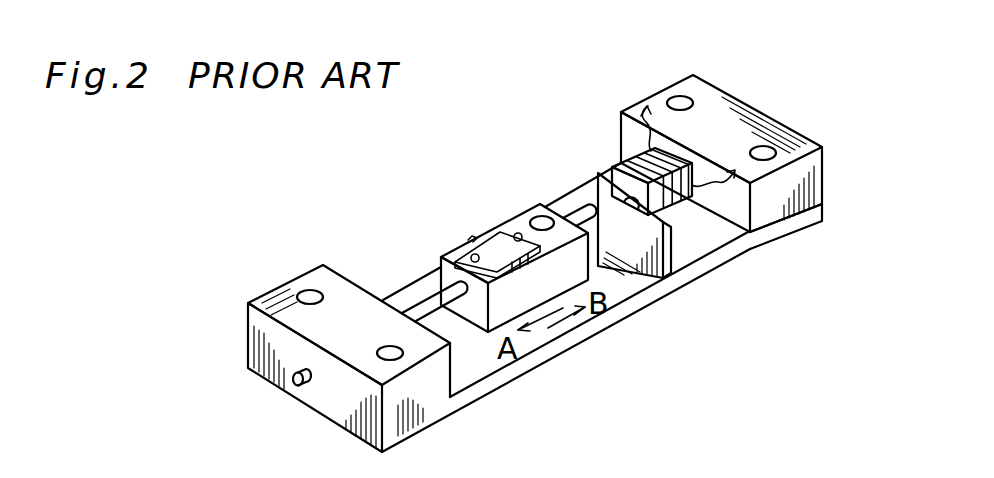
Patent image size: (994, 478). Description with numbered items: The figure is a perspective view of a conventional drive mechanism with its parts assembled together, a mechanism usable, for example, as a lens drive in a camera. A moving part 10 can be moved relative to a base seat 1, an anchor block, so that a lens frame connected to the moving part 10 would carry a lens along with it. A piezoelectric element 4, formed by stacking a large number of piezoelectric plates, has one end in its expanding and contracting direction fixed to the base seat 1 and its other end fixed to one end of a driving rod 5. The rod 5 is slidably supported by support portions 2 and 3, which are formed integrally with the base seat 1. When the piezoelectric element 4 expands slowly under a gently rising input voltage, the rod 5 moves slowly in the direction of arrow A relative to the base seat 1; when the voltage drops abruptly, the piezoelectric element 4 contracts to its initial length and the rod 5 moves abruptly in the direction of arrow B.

The base seat 1 is at (655, 92).
The support portion 2 is at (670, 257).
The support portion 3 is at (442, 380).
The piezoelectric element 4 is at (612, 166).
The driving rod 5 is at (418, 300).
The moving part 10 is at (518, 214).